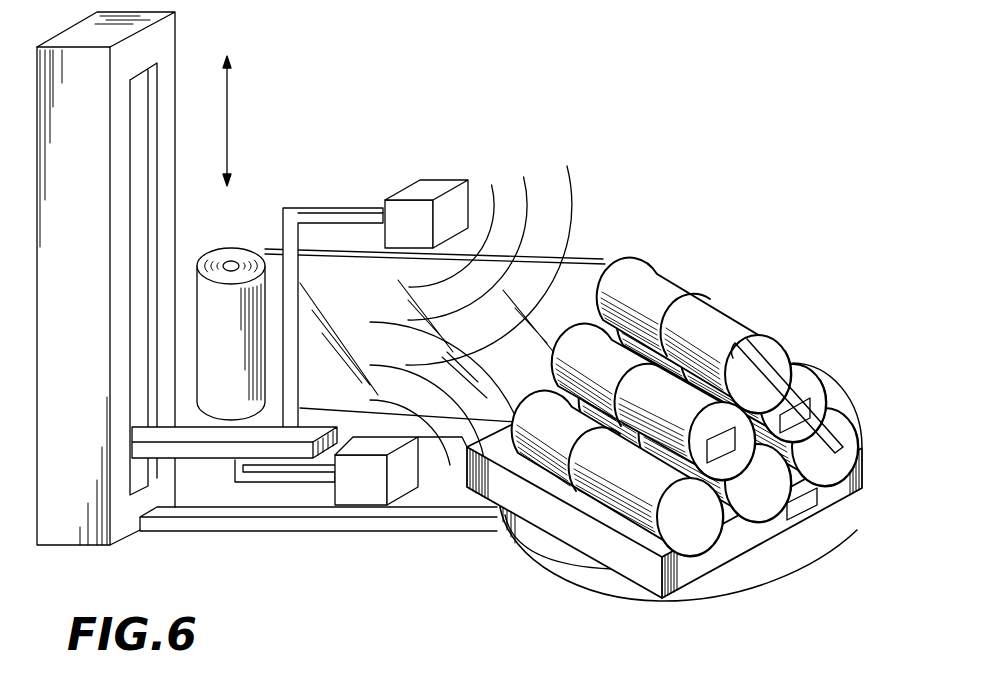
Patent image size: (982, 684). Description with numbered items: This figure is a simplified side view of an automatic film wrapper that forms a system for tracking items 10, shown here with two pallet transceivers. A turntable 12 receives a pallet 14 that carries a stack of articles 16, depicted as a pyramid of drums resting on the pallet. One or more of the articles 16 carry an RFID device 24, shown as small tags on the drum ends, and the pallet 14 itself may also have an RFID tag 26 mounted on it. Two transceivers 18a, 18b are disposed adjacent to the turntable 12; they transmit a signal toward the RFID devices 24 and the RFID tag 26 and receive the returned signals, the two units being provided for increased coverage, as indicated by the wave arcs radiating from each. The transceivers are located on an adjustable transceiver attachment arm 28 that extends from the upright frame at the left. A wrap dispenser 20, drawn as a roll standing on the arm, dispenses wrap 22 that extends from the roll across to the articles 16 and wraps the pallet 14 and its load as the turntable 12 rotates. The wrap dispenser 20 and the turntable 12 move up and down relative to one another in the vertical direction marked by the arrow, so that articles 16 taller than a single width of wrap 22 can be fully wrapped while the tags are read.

The system for tracking items 10 is at (410, 104).
The turntable 12 is at (548, 556).
The pallet 14 is at (735, 547).
The articles 16 is at (727, 320).
The transceiver 18a is at (428, 192).
The transceiver 18b is at (367, 488).
The wrap dispenser 20 is at (233, 258).
The wrap 22 is at (568, 262).
The RFID device 24 is at (848, 356).
The RFID tag 26 is at (808, 502).
The adjustable transceiver attachment arm 28 is at (192, 453).